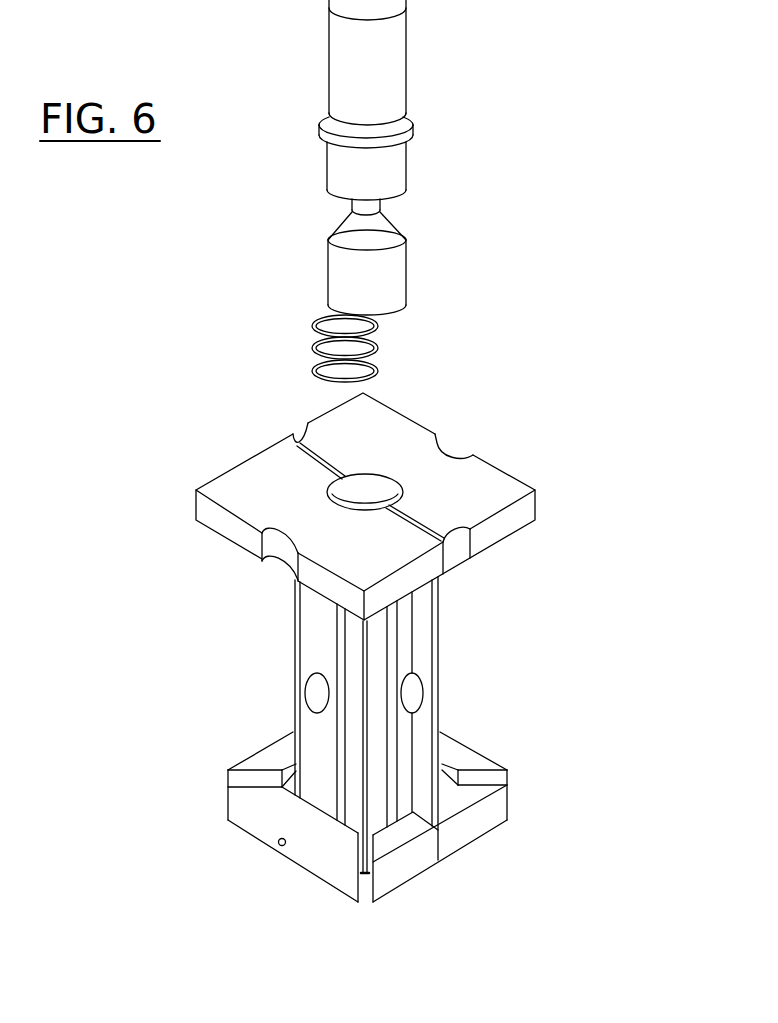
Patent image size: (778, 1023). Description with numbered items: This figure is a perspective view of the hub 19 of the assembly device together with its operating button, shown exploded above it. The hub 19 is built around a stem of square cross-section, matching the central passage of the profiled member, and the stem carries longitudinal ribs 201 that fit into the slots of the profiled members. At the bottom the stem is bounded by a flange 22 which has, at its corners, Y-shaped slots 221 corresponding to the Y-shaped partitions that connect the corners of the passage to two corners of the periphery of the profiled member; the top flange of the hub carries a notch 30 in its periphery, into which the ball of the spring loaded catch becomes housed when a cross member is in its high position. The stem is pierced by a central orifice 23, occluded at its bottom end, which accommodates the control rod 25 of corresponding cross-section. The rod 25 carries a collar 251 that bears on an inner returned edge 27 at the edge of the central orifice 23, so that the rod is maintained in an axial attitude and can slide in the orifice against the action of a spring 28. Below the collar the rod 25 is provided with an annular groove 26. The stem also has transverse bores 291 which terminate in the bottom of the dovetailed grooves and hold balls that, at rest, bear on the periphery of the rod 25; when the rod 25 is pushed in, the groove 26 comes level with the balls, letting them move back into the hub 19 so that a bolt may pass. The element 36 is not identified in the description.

The hub 19 is at (407, 502).
The central orifice 23 is at (343, 497).
The inner returned edge 27 is at (397, 473).
The notch 36 is at (460, 447).
The notch 30 is at (460, 548).
The control rod 25 is at (390, 53).
The collar 251 is at (414, 126).
The annular groove 26 is at (390, 208).
The spring 28 is at (390, 343).
The longitudinal ribs 201 is at (376, 725).
The transverse bores 291 is at (413, 692).
The flange 22 is at (371, 826).
The Y-shaped slots 221 is at (345, 866).